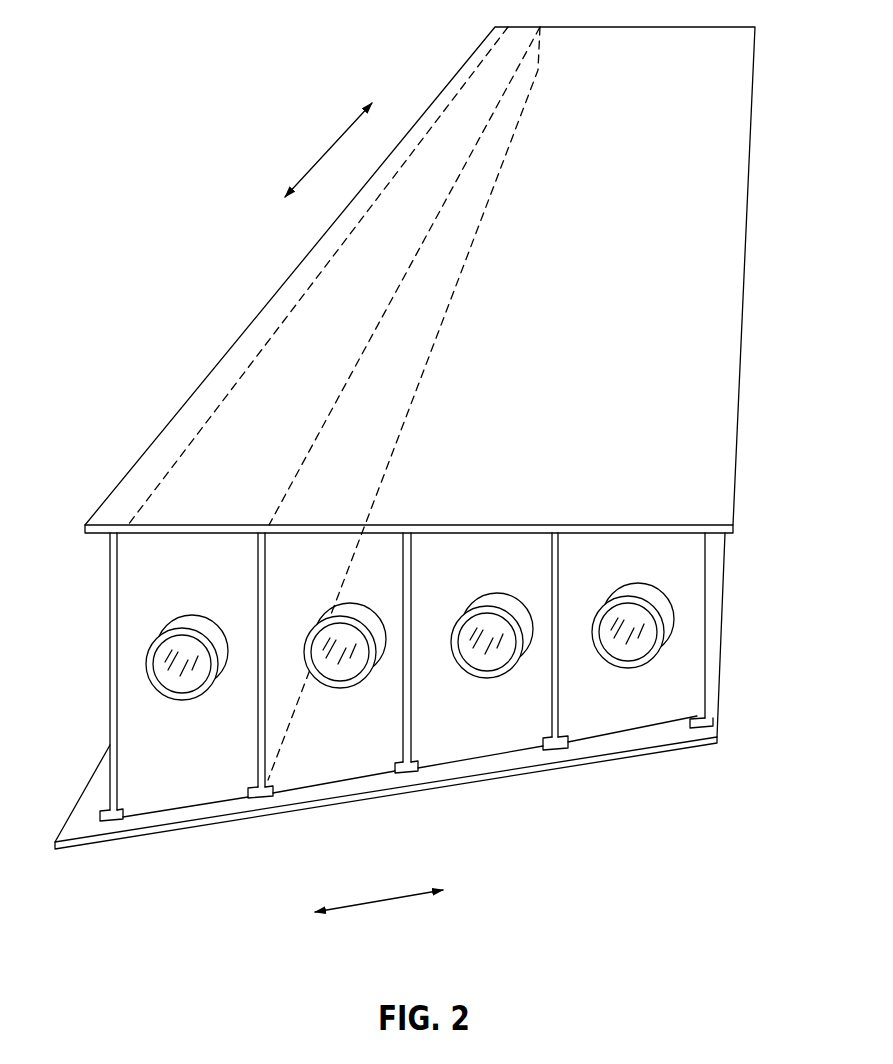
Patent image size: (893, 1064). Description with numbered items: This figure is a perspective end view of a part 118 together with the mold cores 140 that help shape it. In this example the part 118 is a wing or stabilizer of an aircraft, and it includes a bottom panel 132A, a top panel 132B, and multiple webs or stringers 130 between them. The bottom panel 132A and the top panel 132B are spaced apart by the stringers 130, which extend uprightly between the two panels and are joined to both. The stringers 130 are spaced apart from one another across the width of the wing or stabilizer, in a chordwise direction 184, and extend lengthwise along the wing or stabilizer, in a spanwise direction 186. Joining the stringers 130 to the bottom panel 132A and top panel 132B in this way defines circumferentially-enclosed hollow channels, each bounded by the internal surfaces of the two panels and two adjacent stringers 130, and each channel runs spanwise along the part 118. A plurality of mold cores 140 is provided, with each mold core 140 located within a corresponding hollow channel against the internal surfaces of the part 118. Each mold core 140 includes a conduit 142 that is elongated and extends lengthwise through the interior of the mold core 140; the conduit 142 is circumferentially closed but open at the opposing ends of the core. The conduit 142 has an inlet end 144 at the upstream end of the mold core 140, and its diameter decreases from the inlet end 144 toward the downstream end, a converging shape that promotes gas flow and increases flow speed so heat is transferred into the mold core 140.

The part 118 is at (116, 473).
The stringers 130 is at (110, 683).
The bottom panel 132A is at (158, 818).
The top panel 132B is at (265, 300).
The mold core 140 is at (220, 787).
The conduit 142 is at (160, 660).
The inlet end 144 is at (168, 699).
The chordwise direction 184 is at (378, 903).
The spanwise direction 186 is at (330, 148).